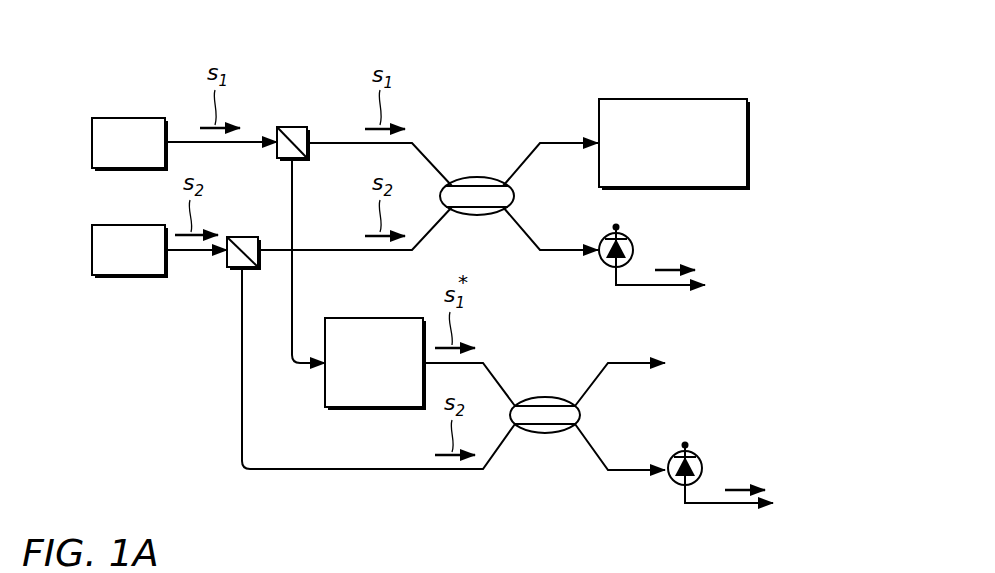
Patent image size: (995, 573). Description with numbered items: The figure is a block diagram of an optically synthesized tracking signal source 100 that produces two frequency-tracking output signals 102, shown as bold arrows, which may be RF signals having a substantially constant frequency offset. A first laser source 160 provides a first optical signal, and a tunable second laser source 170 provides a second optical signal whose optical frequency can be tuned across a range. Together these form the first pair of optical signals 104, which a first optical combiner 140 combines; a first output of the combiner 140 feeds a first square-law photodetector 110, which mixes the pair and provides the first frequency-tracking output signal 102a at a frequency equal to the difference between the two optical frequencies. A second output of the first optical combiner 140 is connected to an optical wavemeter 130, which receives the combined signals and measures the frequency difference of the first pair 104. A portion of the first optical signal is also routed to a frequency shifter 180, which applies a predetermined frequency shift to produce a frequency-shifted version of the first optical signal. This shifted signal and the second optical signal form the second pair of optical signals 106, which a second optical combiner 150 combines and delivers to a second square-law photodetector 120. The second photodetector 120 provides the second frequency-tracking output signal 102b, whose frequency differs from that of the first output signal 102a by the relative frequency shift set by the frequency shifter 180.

The optically synthesized tracking signal source 100 is at (690, 48).
The frequency-tracking output signals 102 is at (719, 345).
The first frequency-tracking output signal 102a is at (671, 268).
The second frequency-tracking output signal 102b is at (741, 488).
The first pair of optical signals 104 is at (416, 57).
The second pair of optical signals 106 is at (441, 480).
The first square-law photodetector 110 is at (630, 299).
The second square-law photodetector 120 is at (698, 519).
The optical wavemeter 130 is at (677, 100).
The first optical combiner 140 is at (477, 178).
The second optical combiner 150 is at (545, 435).
The first laser source 160 is at (130, 121).
The second laser source 170 is at (130, 227).
The frequency shifter 180 is at (377, 405).